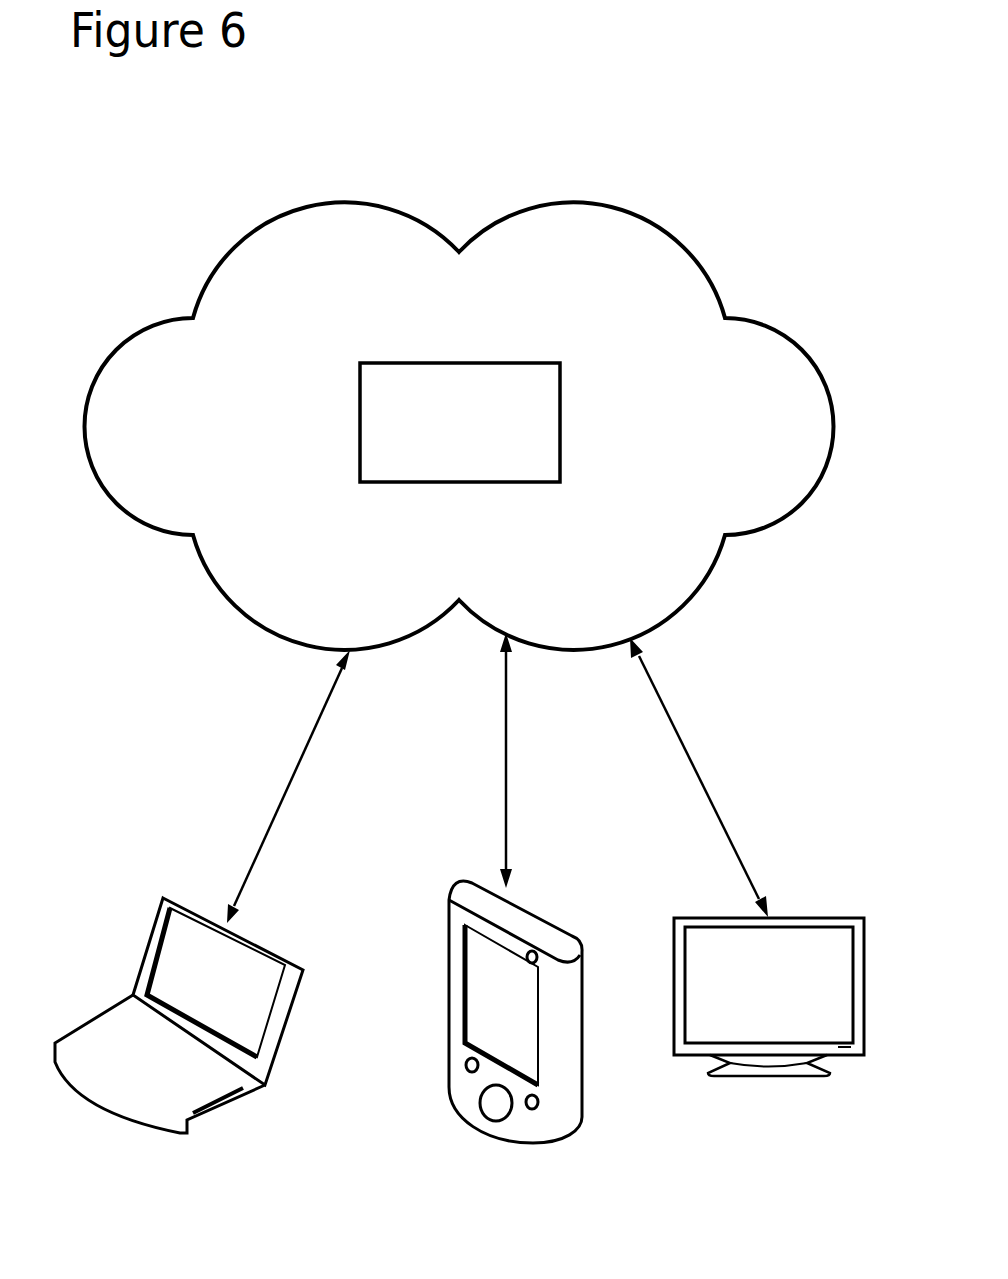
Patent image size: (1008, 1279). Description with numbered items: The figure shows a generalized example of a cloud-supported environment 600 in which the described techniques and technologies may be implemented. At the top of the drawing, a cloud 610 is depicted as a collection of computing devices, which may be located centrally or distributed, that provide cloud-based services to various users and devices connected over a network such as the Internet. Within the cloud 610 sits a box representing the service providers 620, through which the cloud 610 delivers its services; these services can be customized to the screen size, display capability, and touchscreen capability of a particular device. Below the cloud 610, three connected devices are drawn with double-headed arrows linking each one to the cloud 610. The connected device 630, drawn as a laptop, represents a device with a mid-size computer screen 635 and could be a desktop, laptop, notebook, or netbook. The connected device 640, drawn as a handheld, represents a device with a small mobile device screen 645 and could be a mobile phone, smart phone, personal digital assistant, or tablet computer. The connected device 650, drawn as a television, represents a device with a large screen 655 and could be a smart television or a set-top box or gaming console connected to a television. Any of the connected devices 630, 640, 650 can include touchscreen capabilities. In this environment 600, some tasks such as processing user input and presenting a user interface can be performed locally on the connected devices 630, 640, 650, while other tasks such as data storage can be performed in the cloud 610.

The cloud-supported environment 600 is at (798, 199).
The cloud 610 is at (480, 327).
The service providers 620 is at (480, 462).
The connected device 630 is at (176, 1015).
The computer screen 635 is at (190, 999).
The connected device 640 is at (512, 981).
The mobile device screen 645 is at (485, 1024).
The connected device 650 is at (769, 968).
The large screen 655 is at (748, 996).